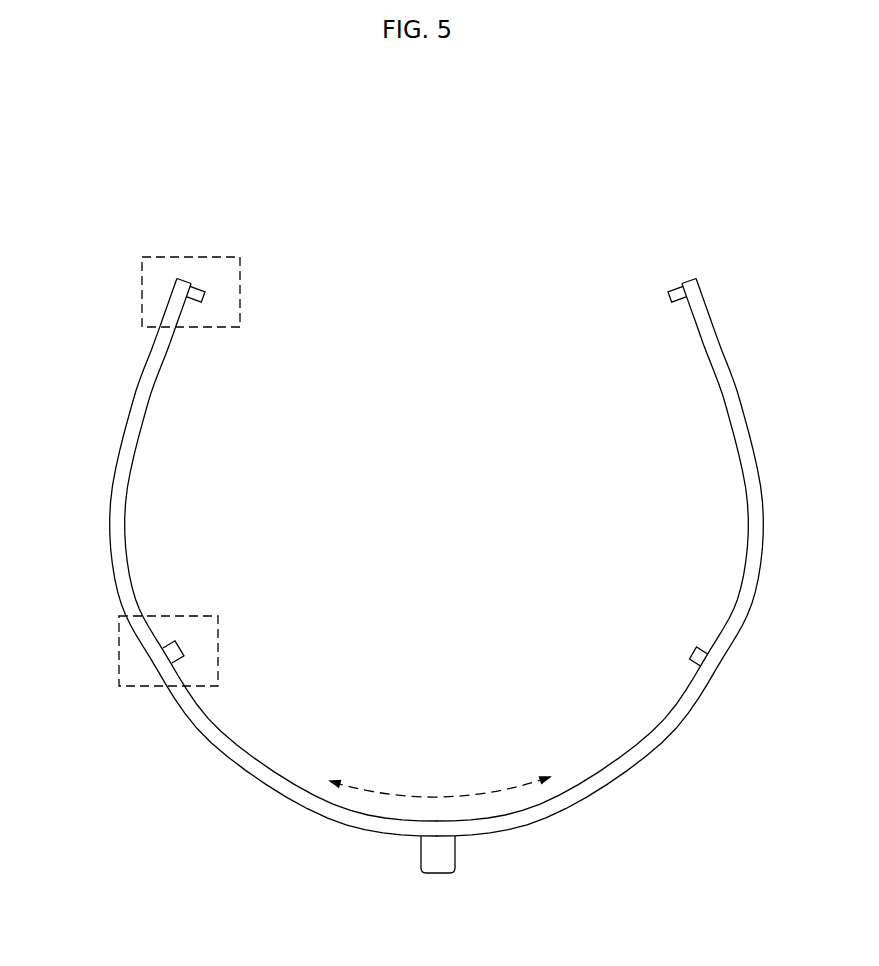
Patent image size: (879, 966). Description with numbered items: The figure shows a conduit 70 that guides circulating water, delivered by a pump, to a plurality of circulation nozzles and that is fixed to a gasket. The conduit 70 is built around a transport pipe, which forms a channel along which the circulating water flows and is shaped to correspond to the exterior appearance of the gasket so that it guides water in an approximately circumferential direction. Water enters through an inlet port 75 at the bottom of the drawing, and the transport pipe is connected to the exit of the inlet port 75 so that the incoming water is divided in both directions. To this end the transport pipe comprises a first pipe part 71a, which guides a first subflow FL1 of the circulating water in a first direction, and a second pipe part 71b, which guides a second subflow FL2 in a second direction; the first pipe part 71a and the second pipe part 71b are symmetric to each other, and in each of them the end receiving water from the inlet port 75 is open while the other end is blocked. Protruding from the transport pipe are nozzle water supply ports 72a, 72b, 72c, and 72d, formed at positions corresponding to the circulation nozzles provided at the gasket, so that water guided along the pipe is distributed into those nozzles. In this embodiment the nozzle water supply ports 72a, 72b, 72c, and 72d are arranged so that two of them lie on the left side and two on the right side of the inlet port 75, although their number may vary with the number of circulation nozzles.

The conduit 70 is at (111, 179).
The first pipe part 71a is at (222, 735).
The second pipe part 71b is at (643, 748).
The nozzle water supply port 72a is at (197, 294).
The nozzle water supply port 72b is at (173, 650).
The nozzle water supply port 72c is at (698, 658).
The nozzle water supply port 72d is at (676, 294).
The inlet port 75 is at (447, 862).
The first subflow FL1 is at (440, 782).
The second subflow FL2 is at (484, 779).